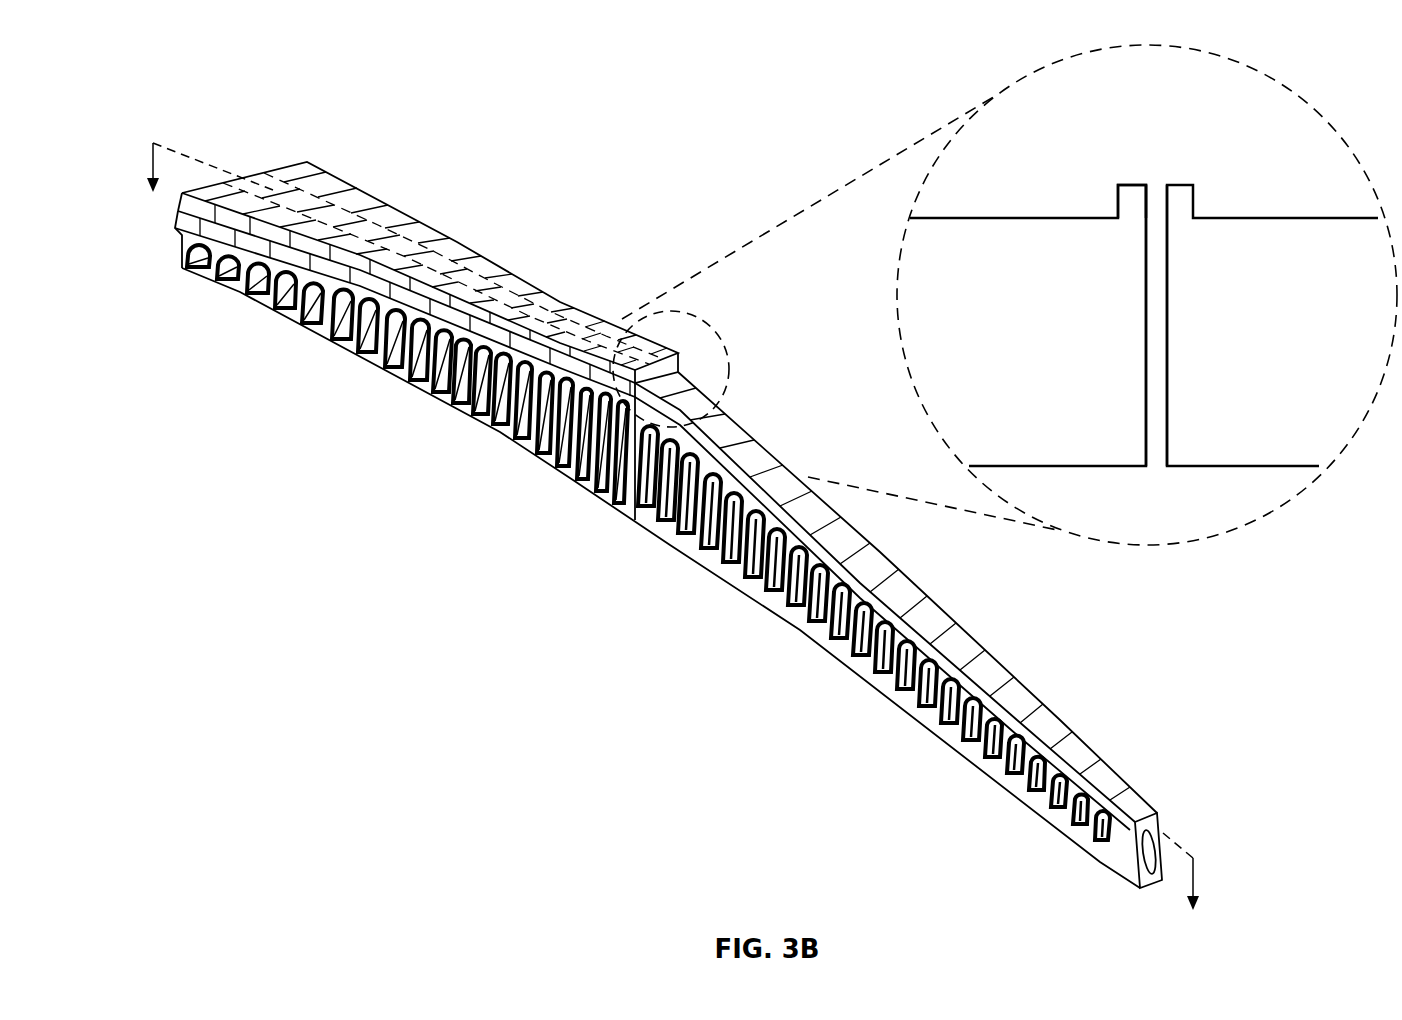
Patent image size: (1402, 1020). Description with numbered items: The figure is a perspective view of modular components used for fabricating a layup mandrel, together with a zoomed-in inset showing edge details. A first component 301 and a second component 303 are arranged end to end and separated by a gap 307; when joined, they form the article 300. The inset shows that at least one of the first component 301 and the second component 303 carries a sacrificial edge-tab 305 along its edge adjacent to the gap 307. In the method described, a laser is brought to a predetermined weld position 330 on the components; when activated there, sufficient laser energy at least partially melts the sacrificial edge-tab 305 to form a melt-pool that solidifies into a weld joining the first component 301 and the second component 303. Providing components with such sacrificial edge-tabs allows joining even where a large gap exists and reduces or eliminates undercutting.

The article 300 is at (156, 98).
The first component 301 is at (1027, 700).
The second component 303 is at (430, 262).
The sacrificial edge-tab 305 is at (1130, 195).
The gap 307 is at (1160, 172).
The weld position 330 is at (719, 363).